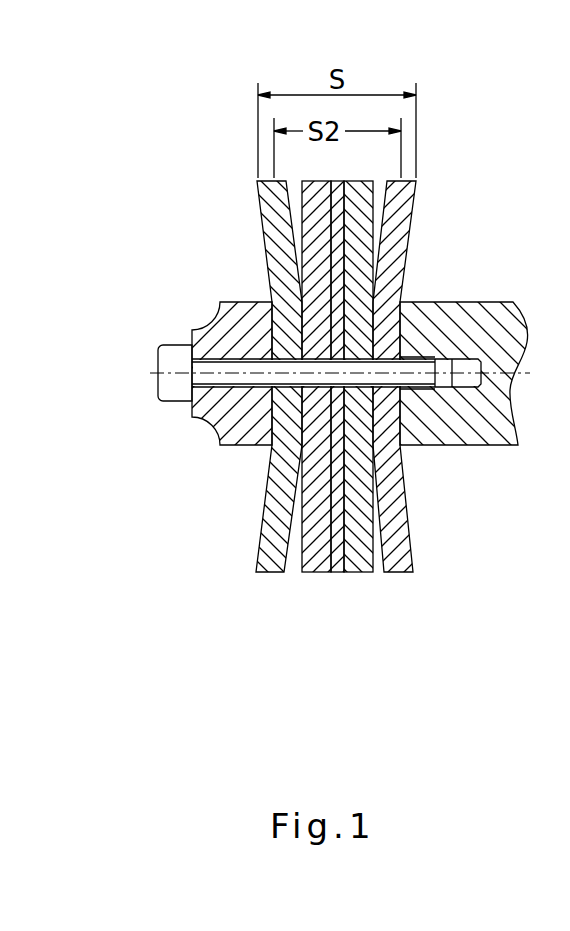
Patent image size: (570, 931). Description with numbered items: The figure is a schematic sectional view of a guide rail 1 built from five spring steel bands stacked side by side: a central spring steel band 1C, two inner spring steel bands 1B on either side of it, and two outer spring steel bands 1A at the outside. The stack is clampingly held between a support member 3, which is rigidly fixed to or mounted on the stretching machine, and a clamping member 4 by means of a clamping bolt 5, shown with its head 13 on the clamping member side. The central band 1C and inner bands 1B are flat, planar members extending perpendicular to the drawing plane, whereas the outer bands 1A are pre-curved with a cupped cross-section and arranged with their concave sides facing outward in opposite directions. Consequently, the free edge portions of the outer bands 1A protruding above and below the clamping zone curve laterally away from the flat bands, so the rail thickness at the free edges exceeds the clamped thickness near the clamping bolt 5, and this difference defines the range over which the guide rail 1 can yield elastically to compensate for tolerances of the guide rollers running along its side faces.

The guide rail 1 is at (463, 147).
The outer spring steel band 1A is at (276, 233).
The inner spring steel band 1B is at (355, 543).
The central spring steel band 1C is at (337, 512).
The support member 3 is at (460, 423).
The clamping member 4 is at (217, 423).
The clamping bolt 5 is at (220, 378).
The bolt head 13 is at (117, 350).